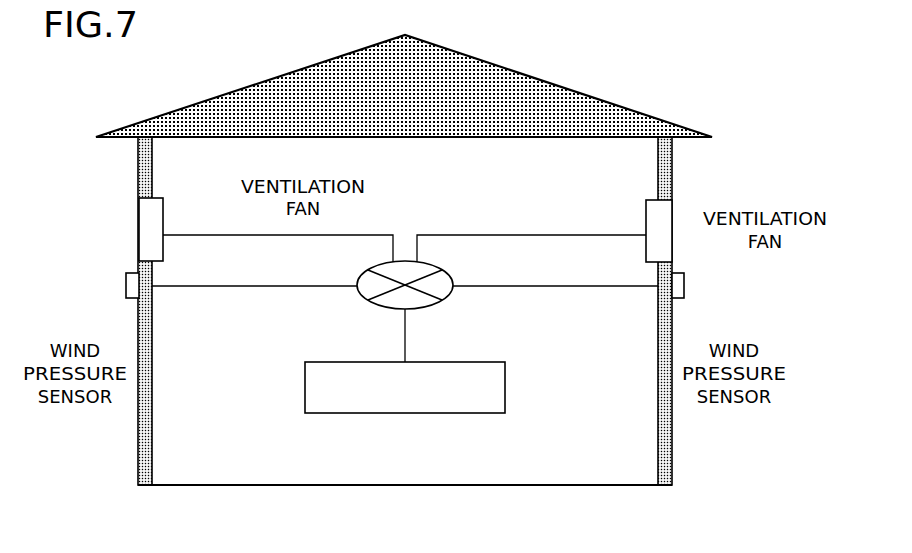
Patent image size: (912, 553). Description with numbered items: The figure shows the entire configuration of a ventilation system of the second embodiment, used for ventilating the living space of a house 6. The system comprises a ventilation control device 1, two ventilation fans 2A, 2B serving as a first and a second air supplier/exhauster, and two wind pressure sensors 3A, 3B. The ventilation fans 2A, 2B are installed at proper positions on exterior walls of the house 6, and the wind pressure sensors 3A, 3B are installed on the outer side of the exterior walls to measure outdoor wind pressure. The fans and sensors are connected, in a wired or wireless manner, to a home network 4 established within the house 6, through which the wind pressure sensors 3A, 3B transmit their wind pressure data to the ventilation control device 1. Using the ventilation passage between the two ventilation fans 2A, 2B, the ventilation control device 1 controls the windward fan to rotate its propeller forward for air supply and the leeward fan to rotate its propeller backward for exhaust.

The ventilation control device 1 is at (445, 362).
The ventilation fan 2A is at (164, 202).
The ventilation fan 2B is at (672, 205).
The wind pressure sensor 3A is at (125, 291).
The wind pressure sensor 3B is at (684, 287).
The home network 4 is at (452, 268).
The house 6 is at (503, 67).